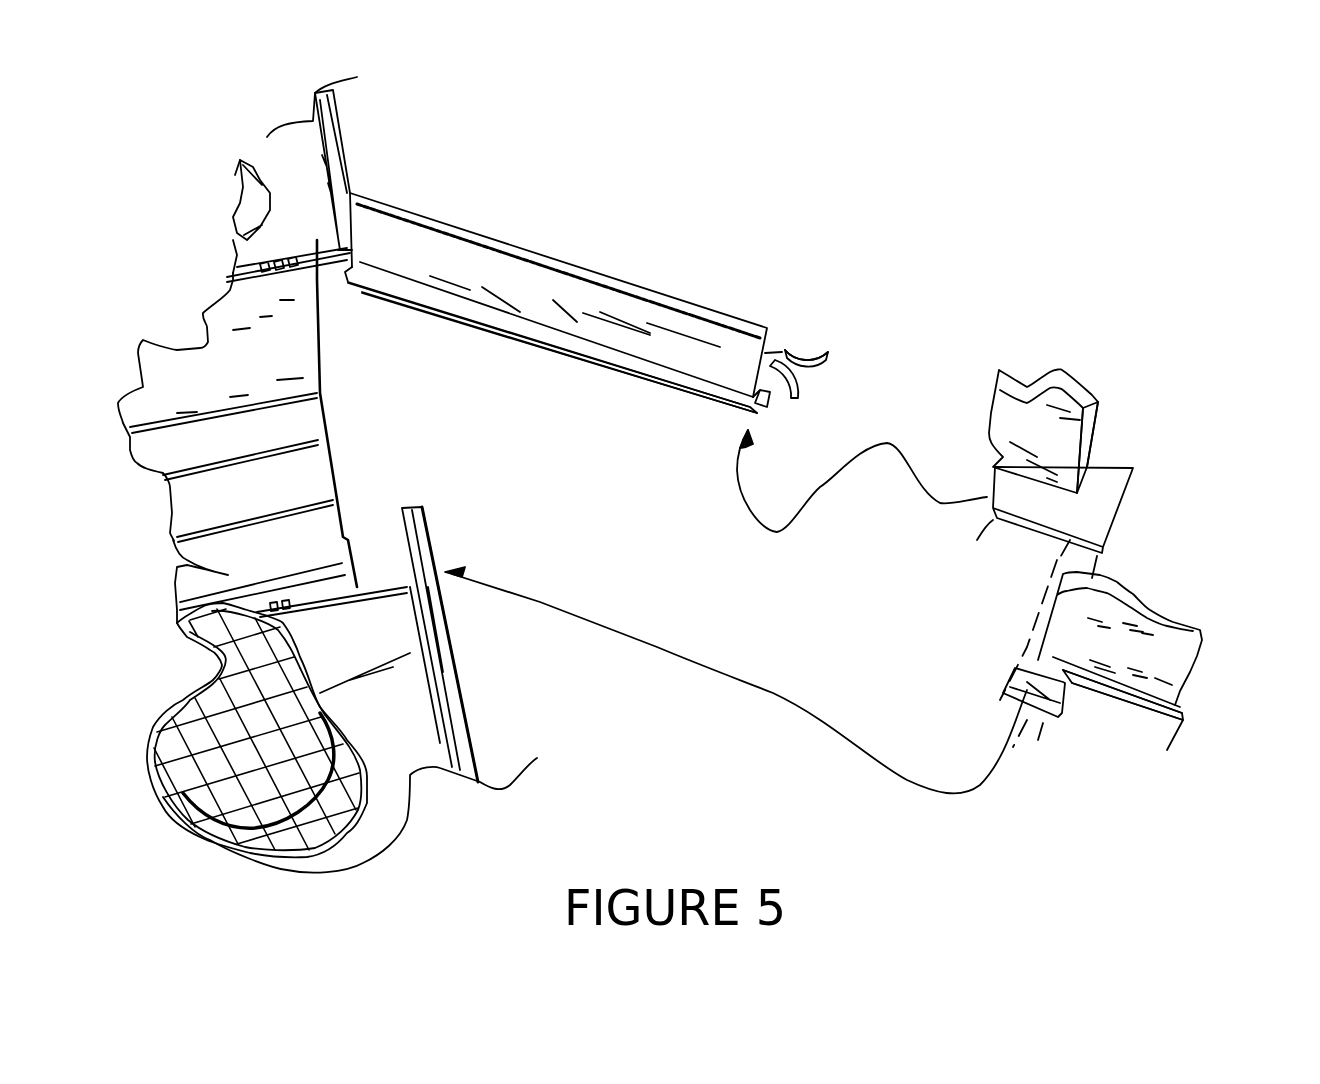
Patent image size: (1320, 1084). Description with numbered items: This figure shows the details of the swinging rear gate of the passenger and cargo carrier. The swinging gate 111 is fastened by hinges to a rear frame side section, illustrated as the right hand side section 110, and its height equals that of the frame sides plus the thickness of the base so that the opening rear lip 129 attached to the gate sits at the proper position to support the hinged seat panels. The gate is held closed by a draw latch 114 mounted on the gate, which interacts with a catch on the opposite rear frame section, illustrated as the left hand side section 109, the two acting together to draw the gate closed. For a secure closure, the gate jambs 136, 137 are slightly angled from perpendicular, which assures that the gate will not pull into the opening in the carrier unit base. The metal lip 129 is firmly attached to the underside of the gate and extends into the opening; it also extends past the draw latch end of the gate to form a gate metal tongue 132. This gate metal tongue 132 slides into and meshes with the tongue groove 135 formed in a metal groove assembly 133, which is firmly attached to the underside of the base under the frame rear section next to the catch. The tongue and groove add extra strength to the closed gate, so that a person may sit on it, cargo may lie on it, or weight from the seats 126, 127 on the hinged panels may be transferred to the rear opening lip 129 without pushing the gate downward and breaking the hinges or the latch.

The left hand side section 109 is at (447, 690).
The right hand side section 110 is at (340, 147).
The swinging gate 111 is at (550, 262).
The draw latch 114 is at (807, 380).
The seat 126 is at (240, 185).
The seat 127 is at (200, 778).
The opening rear lip 129 is at (623, 362).
The gate metal tongue 132 is at (767, 420).
The metal groove assembly 133 is at (1093, 685).
The tongue groove 135 is at (1058, 713).
The gate jamb 136 is at (773, 337).
The gate jamb 137 is at (408, 497).